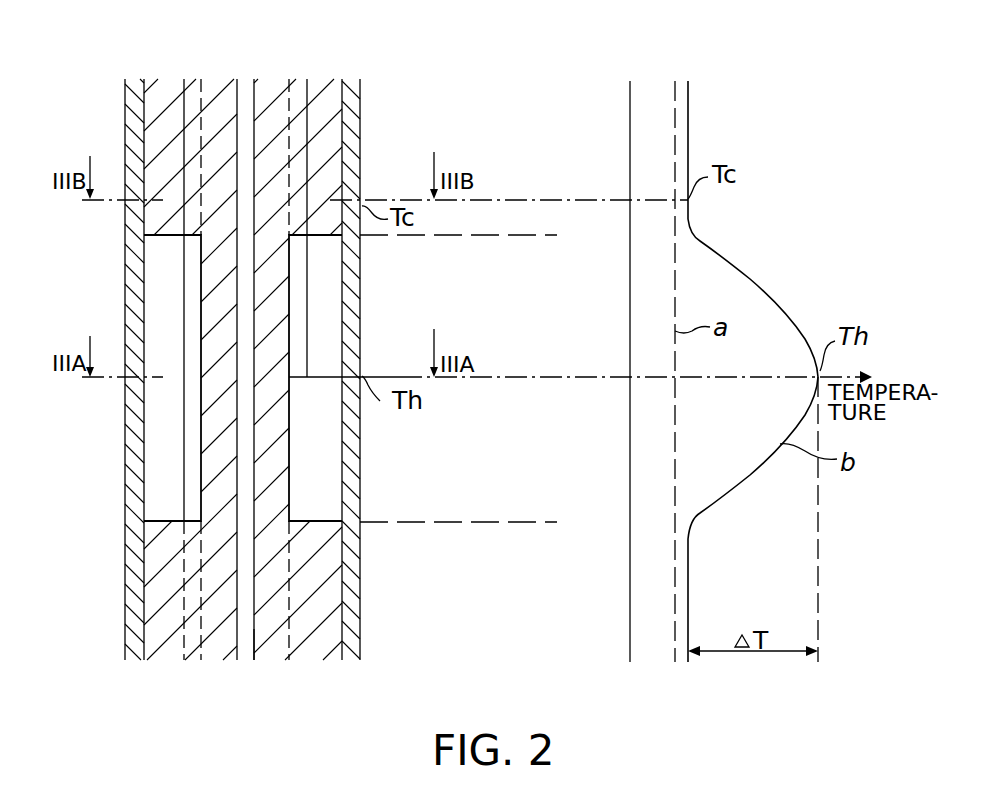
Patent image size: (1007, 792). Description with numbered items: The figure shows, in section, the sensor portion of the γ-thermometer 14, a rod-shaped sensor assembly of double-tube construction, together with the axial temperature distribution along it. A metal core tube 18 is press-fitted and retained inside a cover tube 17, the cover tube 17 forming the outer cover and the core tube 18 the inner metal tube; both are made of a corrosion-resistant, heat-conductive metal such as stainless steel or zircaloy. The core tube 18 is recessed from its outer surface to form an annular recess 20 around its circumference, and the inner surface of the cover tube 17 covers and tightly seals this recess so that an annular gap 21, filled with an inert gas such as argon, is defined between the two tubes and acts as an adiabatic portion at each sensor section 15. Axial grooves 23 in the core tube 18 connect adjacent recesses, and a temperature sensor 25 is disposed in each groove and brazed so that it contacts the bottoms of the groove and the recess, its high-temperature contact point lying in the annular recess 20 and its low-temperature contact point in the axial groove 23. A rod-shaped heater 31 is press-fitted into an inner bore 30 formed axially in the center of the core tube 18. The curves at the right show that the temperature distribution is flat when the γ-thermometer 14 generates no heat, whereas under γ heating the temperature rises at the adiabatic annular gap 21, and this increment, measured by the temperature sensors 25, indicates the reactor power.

The γ-thermometer 14 is at (358, 63).
The sensor section 15 is at (123, 256).
The cover tube 17 is at (362, 117).
The core tube 18 is at (330, 150).
The annular recess 20 is at (298, 363).
The annular gap 21 is at (167, 458).
The axial groove 23 is at (187, 125).
The temperature sensor 25 is at (190, 307).
The inner bore 30 is at (253, 643).
The heater 31 is at (243, 82).